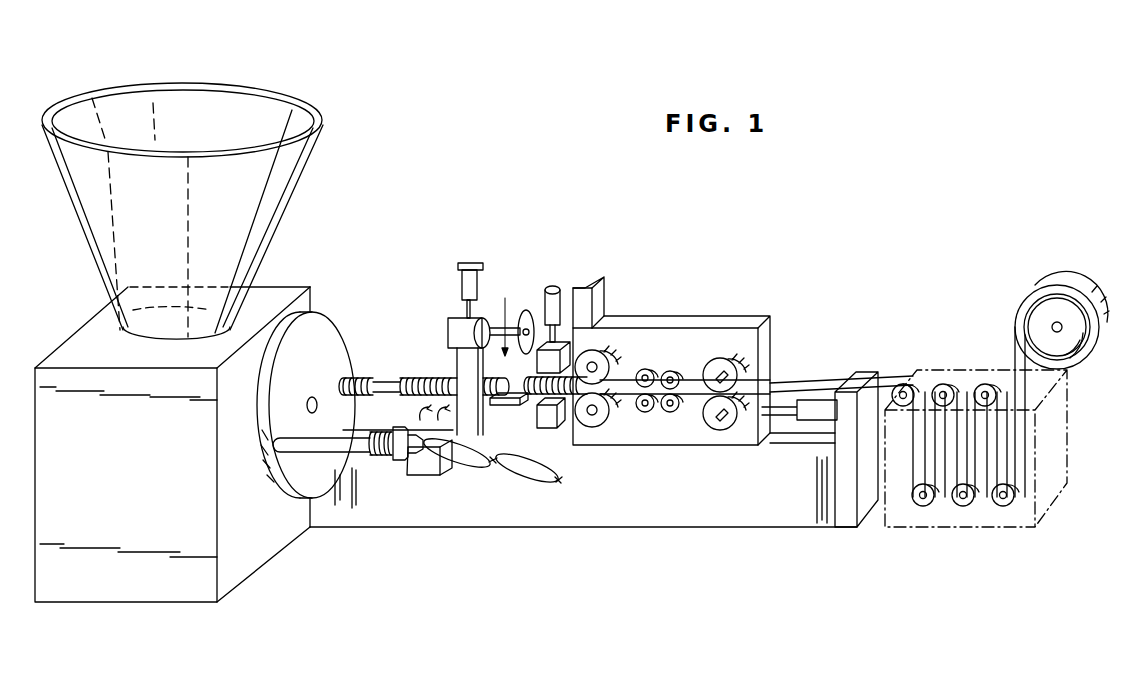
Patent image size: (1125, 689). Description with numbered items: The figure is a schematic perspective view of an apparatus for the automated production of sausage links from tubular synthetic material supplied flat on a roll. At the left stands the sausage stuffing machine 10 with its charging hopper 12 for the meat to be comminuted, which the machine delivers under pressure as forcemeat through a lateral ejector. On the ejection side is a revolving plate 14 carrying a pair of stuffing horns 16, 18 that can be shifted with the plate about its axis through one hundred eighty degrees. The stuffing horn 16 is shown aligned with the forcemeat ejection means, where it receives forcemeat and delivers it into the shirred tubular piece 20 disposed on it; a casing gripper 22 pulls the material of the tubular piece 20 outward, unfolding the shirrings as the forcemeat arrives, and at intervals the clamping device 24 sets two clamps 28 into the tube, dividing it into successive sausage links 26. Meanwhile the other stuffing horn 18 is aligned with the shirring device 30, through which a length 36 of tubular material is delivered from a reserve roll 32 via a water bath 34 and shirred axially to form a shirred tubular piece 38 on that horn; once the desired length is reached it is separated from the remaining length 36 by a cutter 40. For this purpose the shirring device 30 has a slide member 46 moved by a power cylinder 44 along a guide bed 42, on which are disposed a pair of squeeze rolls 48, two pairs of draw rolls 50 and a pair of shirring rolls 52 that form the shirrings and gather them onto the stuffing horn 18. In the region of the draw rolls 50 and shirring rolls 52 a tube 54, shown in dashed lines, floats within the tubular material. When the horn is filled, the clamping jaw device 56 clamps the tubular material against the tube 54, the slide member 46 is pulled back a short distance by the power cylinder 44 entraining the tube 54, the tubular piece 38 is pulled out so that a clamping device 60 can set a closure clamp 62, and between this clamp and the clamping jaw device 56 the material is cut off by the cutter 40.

The sausage stuffing machine 10 is at (260, 542).
The charging hopper 12 is at (268, 108).
The revolving plate 14 is at (332, 340).
The stuffing horn 16 is at (337, 450).
The stuffing horn 18 is at (390, 378).
The shirred tubular piece 20 is at (380, 455).
The casing gripper 22 is at (395, 458).
The clamping device 24 is at (442, 402).
The sausage links 26 is at (533, 470).
The clamps 28 is at (418, 410).
The shirring device 30 is at (676, 303).
The reserve roll 32 is at (1017, 313).
The water bath 34 is at (992, 517).
The length of tubular synthetic material 36 is at (817, 382).
The shirred tubular piece 38 is at (363, 378).
The cutter 40 is at (527, 310).
The guide bed 42 is at (730, 505).
The power cylinder 44 is at (815, 413).
The slide member 46 is at (747, 348).
The squeeze rolls 48 is at (722, 367).
The draw rolls 50 is at (677, 367).
The shirring rolls 52 is at (597, 357).
The tube 54 is at (620, 382).
The clamping jaw device 56 is at (575, 360).
The clamping device 60 is at (505, 298).
The closure clamp 62 is at (504, 358).